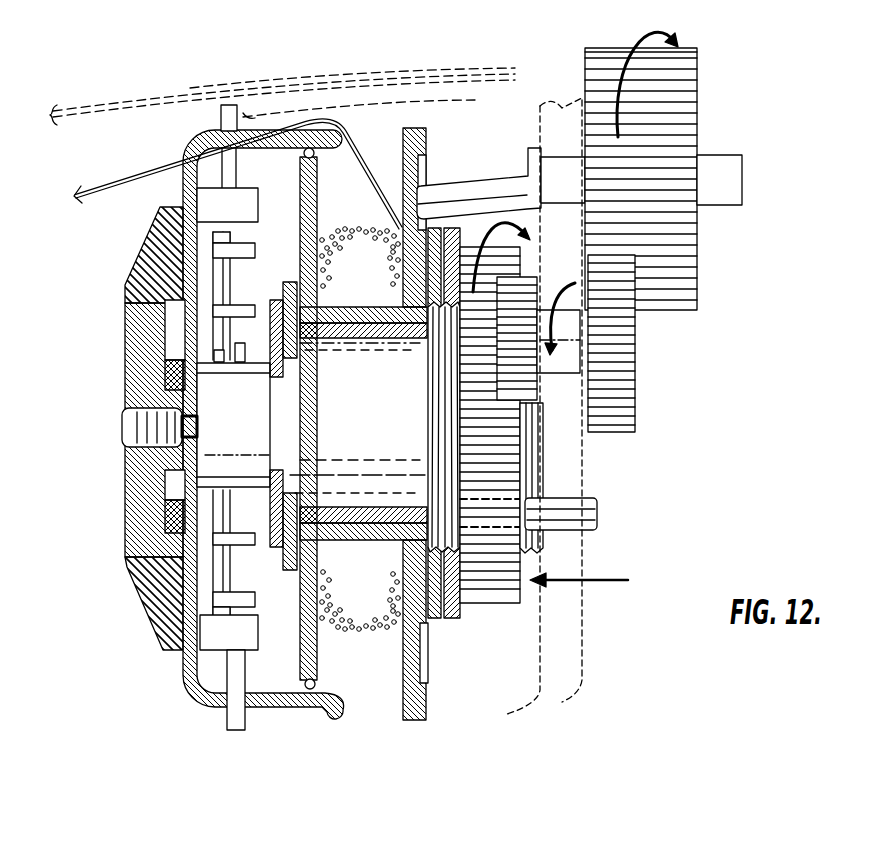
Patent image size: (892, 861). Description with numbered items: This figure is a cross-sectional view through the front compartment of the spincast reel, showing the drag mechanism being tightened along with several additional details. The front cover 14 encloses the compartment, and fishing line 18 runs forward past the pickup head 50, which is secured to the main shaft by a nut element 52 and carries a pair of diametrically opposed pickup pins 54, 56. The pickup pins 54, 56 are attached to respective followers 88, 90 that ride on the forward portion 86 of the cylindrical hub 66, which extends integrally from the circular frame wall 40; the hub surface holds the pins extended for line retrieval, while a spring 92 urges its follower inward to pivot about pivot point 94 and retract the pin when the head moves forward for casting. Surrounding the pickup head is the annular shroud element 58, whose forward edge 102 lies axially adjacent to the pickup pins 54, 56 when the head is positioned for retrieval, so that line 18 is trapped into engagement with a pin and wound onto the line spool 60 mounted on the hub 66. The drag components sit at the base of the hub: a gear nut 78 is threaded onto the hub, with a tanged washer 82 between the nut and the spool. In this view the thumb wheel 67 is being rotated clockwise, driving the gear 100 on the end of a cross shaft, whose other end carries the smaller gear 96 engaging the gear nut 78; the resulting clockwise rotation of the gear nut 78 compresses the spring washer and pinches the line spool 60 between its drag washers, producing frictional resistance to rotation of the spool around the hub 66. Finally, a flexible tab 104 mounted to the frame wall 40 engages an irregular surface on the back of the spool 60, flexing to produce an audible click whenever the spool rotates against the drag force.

The front cover 14 is at (133, 95).
The fishing line 18 is at (100, 176).
The frame wall 40 is at (529, 418).
The pickup head 50 is at (187, 662).
The nut element 52 is at (125, 332).
The pickup pin 54 is at (220, 118).
The pickup pin 56 is at (247, 717).
The shroud element 58 is at (390, 104).
The line spool 60 is at (485, 126).
The hub 66 is at (300, 418).
The thumb wheel 67 is at (675, 302).
The gear nut 78 is at (493, 597).
The tanged washer 82 is at (662, 0).
The forward portion of hub 86 is at (247, 478).
The follower 88 is at (258, 212).
The follower 90 is at (260, 633).
The spring 92 is at (235, 268).
The pivot point 94 is at (243, 362).
The gear 96 is at (538, 287).
The gear 100 is at (613, 423).
The forward edge 102 is at (243, 104).
The tab 104 is at (470, 195).